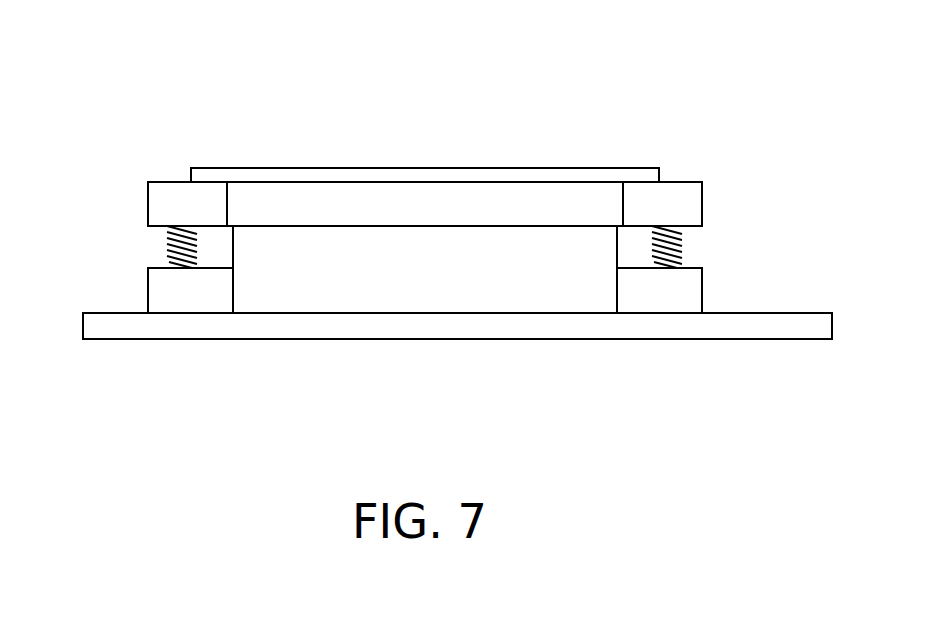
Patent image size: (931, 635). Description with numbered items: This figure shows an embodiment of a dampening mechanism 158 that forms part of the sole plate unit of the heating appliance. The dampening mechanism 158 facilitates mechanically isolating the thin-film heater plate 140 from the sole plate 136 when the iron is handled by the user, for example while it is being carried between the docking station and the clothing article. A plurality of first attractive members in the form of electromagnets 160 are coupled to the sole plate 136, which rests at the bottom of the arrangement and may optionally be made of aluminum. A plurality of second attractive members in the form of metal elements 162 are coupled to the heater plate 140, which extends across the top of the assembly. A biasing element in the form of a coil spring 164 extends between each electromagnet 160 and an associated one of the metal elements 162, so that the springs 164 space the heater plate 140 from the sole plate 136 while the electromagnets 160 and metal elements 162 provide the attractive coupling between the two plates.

The dampening mechanism 158 is at (218, 88).
The sole plate 136 is at (430, 340).
The thin-film heater plate 140 is at (442, 168).
The metal element 162 is at (167, 193).
The coil spring 164 is at (168, 238).
The electromagnet 160 is at (167, 285).